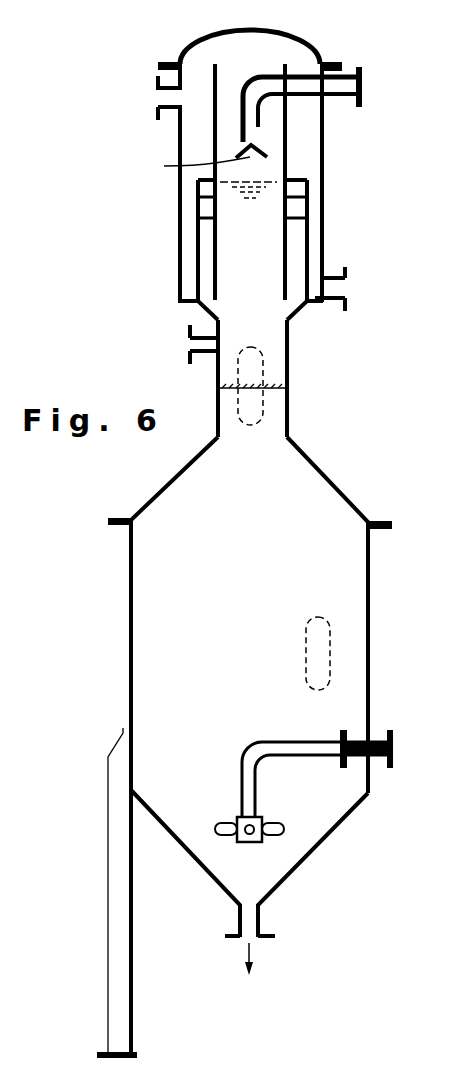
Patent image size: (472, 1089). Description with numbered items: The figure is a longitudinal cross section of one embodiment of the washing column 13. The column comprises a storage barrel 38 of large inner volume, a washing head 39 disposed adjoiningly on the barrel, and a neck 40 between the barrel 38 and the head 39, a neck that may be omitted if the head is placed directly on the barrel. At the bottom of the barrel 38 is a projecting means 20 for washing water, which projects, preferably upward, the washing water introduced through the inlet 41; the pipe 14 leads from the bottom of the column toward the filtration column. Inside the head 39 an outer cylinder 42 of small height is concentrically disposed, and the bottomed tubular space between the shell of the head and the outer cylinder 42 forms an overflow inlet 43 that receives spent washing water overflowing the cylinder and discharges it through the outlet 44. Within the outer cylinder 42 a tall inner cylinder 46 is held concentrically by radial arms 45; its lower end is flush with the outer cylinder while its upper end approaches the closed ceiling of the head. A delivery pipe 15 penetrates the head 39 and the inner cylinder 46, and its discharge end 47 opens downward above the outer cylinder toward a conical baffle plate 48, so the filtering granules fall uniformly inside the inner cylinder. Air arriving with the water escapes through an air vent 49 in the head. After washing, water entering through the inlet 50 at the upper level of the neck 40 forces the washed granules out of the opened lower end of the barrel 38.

The washing column 13 is at (347, 583).
The pipe 14 is at (253, 978).
The delivery pipe 15 is at (362, 88).
The projecting means 20 is at (276, 833).
The storage barrel 38 is at (130, 627).
The washing head 39 is at (318, 50).
The neck 40 is at (288, 350).
The inlet 41 is at (394, 750).
The outer cylinder 42 is at (196, 252).
The overflow inlet 43 is at (315, 241).
The outlet 44 is at (342, 292).
The radial arms 45 is at (297, 209).
The inner cylinder 46 is at (291, 157).
The discharge end 47 is at (250, 131).
The conical baffle plate 48 is at (193, 137).
The air vent 49 is at (157, 97).
The inlet 50 is at (189, 342).